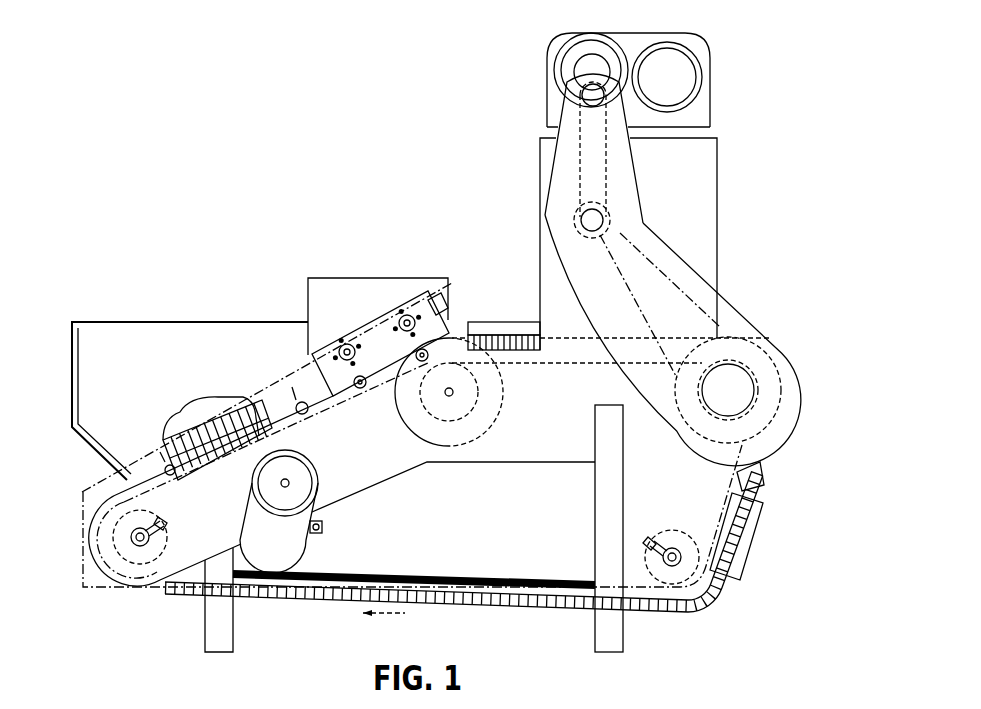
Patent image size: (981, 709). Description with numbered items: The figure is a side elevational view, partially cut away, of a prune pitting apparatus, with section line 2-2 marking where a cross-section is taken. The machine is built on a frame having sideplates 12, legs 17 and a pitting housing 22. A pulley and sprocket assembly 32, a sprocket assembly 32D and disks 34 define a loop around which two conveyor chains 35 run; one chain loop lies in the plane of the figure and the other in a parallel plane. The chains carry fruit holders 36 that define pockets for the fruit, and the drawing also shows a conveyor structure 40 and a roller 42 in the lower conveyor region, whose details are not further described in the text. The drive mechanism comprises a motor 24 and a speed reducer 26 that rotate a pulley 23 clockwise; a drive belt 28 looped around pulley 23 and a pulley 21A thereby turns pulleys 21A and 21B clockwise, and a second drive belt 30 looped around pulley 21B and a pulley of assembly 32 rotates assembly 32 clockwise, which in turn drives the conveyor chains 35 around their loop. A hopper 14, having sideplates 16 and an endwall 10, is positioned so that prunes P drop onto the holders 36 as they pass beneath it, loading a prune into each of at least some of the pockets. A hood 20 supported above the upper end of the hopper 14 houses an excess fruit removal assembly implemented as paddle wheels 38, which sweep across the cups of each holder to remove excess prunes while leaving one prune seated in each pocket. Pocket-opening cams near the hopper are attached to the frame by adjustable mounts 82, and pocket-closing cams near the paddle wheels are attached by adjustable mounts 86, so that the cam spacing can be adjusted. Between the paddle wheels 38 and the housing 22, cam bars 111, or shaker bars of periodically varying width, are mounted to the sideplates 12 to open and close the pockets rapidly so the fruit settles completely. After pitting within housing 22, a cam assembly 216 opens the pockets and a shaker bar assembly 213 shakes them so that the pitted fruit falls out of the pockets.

The endwall 10 is at (72, 358).
The sideplates 12 is at (135, 578).
The hopper 14 is at (133, 324).
The sideplates 16 is at (224, 362).
The legs 17 is at (227, 633).
The hood 20 is at (382, 275).
The pulley 21A is at (577, 217).
The pulley 21B is at (577, 228).
The pitting housing 22 is at (708, 197).
The pulley 23 is at (590, 92).
The motor 24 is at (700, 60).
The speed reducer 26 is at (570, 73).
The drive belt 28 is at (573, 182).
The drive belt 30 is at (718, 317).
The pulley and sprocket assembly 32 is at (770, 343).
The sprocket assembly 32D is at (475, 410).
The disks 34 is at (158, 550).
The conveyor chains 35 is at (502, 578).
The fruit holders 36 is at (505, 603).
The paddle wheels 38 is at (344, 345).
The conveyor 40 is at (402, 425).
The roller 42 is at (325, 473).
The adjustable mounts 82 is at (166, 466).
The adjustable mounts 86 is at (420, 360).
The cam bars 111 is at (476, 322).
The shaker bar assembly 213 is at (750, 547).
The cam assembly 216 is at (760, 463).
The prunes P is at (223, 437).
The line 2- 2 is at (82, 487).